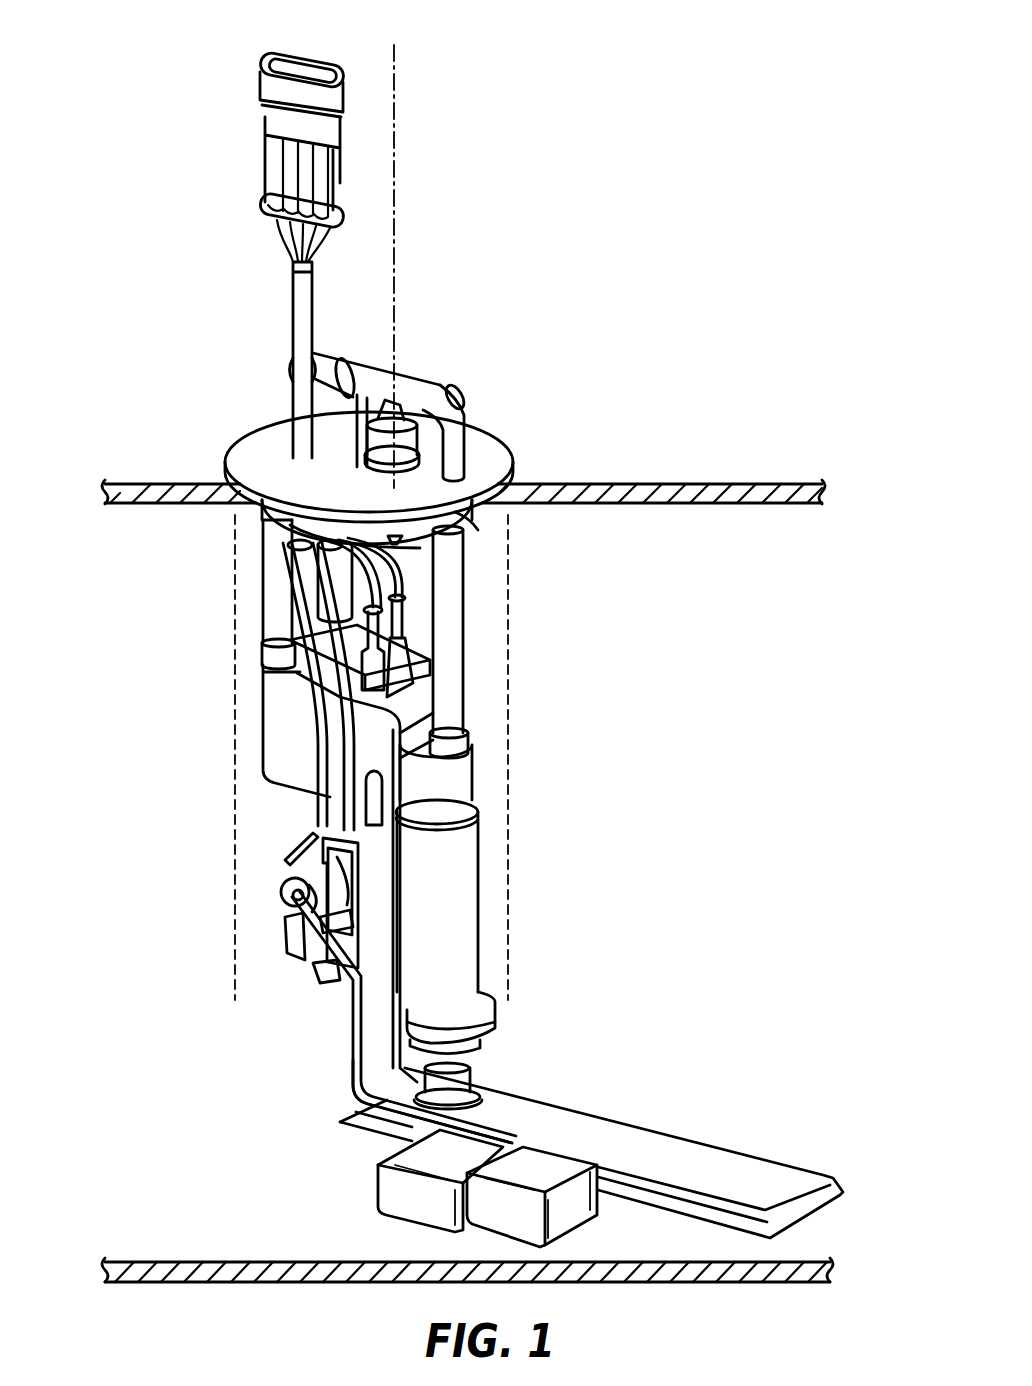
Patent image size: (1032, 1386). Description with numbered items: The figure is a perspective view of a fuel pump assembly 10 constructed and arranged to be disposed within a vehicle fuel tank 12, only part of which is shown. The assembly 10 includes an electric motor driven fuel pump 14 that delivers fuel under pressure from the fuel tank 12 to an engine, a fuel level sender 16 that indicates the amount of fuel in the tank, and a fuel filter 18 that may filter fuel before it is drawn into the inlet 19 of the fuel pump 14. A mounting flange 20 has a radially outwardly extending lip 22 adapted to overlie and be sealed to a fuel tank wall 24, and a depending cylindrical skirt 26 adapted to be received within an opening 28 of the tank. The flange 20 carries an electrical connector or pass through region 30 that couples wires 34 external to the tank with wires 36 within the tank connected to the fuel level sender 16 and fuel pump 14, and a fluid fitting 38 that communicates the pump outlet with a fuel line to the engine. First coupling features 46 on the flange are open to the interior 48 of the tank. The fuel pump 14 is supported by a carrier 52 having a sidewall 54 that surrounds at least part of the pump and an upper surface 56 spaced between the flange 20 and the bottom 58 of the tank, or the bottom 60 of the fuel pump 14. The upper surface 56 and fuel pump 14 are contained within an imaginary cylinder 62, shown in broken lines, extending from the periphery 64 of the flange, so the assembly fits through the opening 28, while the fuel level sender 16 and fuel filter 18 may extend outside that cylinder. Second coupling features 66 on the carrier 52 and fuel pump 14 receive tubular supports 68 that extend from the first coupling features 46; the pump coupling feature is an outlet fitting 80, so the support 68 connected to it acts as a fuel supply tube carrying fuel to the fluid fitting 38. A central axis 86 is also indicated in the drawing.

The fuel pump assembly 10 is at (500, 649).
The fuel tank 12 is at (469, 840).
The fuel pump 14 is at (497, 954).
The fuel level sender 16 is at (310, 992).
The fuel filter 18 is at (585, 1153).
The inlet 19 is at (463, 1088).
The mounting flange 20 is at (371, 453).
The lip 22 is at (500, 462).
The fuel tank wall 24 is at (786, 488).
The skirt 26 is at (420, 550).
The opening 28 is at (237, 477).
The electrical connector or electrical pass through region 30 is at (283, 477).
The wires 34 is at (312, 284).
The wires 36 is at (397, 594).
The fluid fitting 38 is at (328, 400).
The first coupling features 46 is at (262, 522).
The interior 48 is at (762, 712).
The carrier 52 is at (315, 737).
The sidewall 54 is at (394, 922).
The upper surface 56 is at (262, 672).
The bottom 58 is at (203, 1262).
The bottom 60 is at (378, 1132).
The imaginary cylinder 62 is at (235, 527).
The periphery 64 is at (455, 510).
The second coupling features 66 is at (262, 653).
The supports 68 is at (366, 626).
The outlet fitting 80 is at (468, 750).
The central axis 86 is at (394, 48).